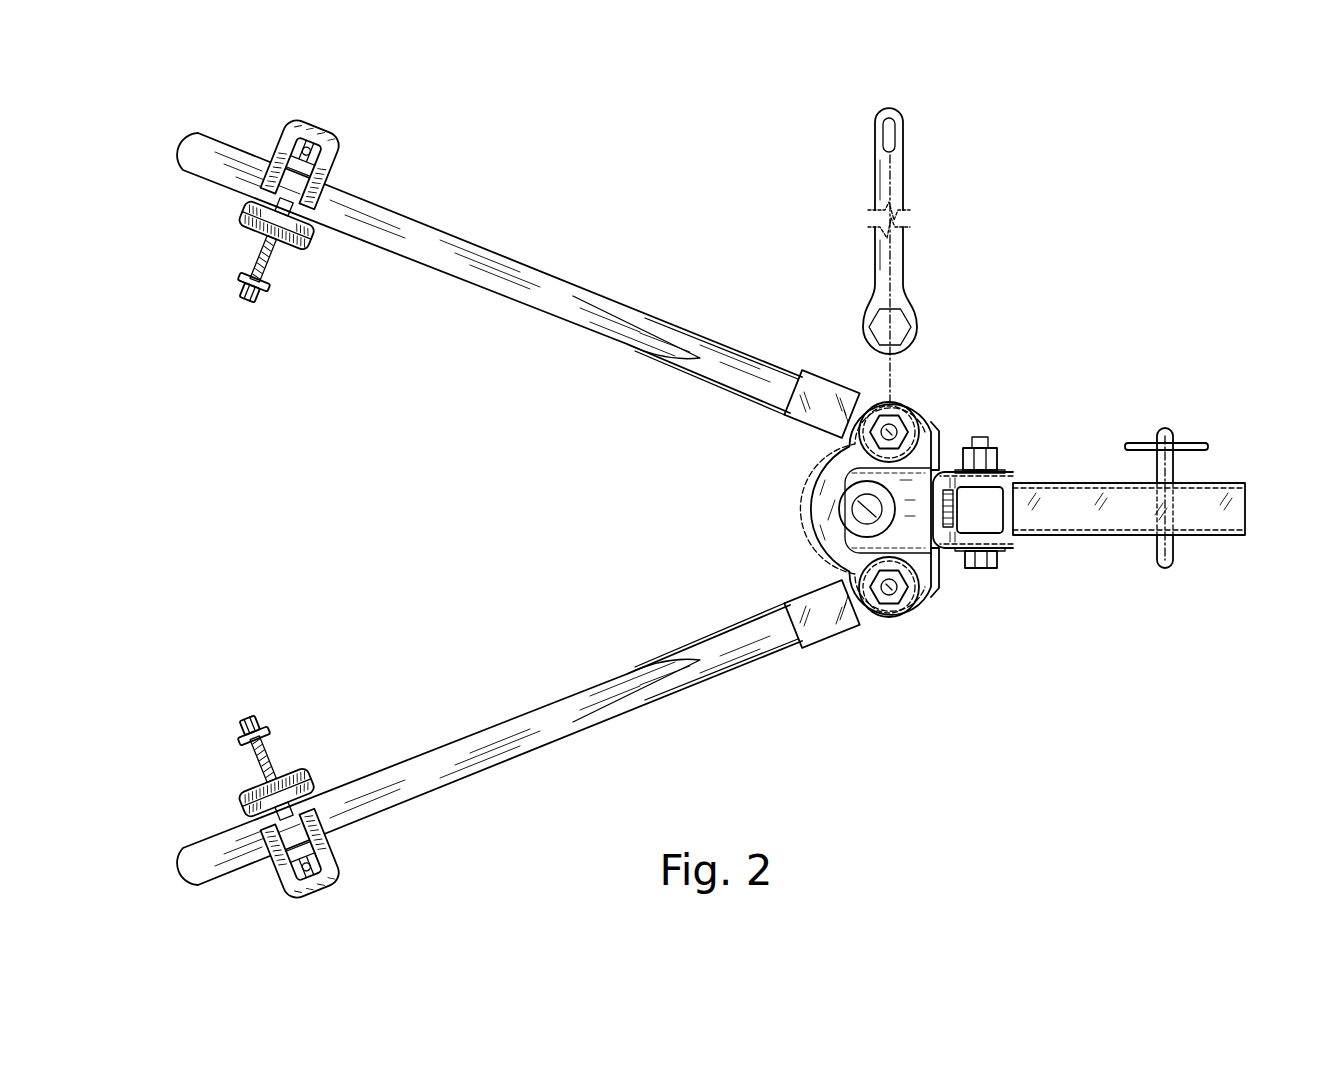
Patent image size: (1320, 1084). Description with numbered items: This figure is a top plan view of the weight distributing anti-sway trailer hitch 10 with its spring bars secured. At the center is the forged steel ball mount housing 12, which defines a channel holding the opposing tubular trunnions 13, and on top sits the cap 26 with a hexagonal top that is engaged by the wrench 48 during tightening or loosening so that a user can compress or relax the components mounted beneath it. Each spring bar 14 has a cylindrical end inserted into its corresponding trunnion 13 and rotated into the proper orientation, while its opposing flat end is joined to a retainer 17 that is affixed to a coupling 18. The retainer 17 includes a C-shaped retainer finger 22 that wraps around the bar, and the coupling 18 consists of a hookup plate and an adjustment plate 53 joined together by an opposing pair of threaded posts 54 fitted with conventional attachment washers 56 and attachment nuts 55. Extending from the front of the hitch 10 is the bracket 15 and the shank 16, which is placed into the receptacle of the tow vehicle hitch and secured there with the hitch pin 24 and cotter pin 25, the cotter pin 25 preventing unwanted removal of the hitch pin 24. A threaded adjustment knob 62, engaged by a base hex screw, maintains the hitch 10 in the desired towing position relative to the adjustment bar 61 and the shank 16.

The anti-sway trailer hitch 10 is at (1102, 252).
The ball mount housing 12 is at (828, 508).
The trunnion 13 is at (820, 383).
The spring bar 14 is at (603, 310).
The bracket 15 is at (1007, 473).
The shank 16 is at (1077, 527).
The retainer 17 is at (340, 877).
The coupling 18 is at (293, 768).
The C-shaped retainer finger 22 is at (333, 181).
The hitch pin 24 is at (1172, 563).
The cotter pin 25 is at (1145, 443).
The cap 26 is at (891, 418).
The wrench 48 is at (893, 258).
The adjustment plate 53 is at (239, 281).
The threaded post 54 is at (270, 265).
The attachment nut 55 is at (258, 300).
The attachment washer 56 is at (262, 723).
The adjustment bar 61 is at (968, 520).
The threaded adjustment knob 62 is at (948, 528).